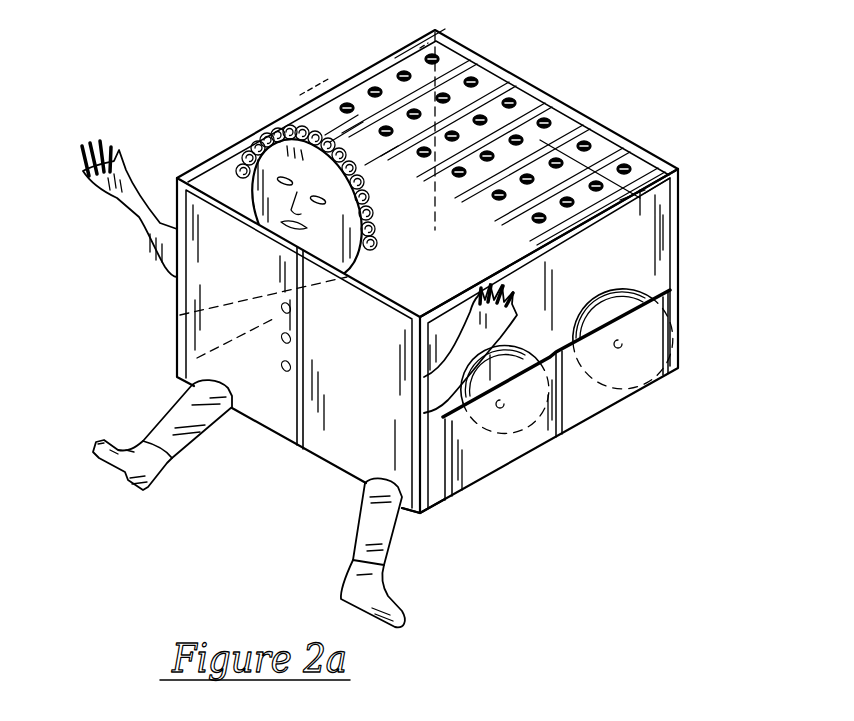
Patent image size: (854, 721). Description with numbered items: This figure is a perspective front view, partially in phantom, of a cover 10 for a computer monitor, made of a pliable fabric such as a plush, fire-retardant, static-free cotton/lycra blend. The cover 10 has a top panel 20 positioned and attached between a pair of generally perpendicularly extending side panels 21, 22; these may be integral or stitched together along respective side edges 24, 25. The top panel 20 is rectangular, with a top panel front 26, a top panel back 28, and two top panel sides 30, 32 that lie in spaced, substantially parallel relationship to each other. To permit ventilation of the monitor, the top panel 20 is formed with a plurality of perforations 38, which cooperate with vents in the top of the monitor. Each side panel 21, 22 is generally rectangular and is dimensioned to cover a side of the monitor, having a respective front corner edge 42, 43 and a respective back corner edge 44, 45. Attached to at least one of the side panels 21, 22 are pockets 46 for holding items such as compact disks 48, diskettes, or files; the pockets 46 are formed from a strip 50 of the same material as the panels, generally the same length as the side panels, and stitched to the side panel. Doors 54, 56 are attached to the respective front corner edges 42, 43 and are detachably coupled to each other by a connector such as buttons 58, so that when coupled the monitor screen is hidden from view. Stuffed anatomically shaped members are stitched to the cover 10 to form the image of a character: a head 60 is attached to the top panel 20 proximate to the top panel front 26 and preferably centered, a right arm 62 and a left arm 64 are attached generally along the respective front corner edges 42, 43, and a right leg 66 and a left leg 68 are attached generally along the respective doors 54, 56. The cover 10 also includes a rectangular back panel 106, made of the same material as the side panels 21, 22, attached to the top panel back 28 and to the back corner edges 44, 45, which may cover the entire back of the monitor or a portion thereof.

The cover 10 is at (195, 38).
The top panel 20 is at (603, 137).
The side panel 21 is at (180, 314).
The side panel 22 is at (662, 259).
The side edge 24 is at (332, 88).
The side edge 25 is at (640, 192).
The top panel front 26 is at (187, 180).
The top panel back 28 is at (538, 90).
The top panel side 30 is at (295, 103).
The top panel side 32 is at (623, 197).
The perforations 38 is at (470, 78).
The front corner edge 42 is at (177, 283).
The front corner edge 43 is at (420, 487).
The back corner edge 44 is at (404, 50).
The back corner edge 45 is at (680, 328).
The pockets 46 is at (577, 412).
The compact disks 48 is at (517, 377).
The strip 50 is at (482, 460).
The door 54 is at (208, 276).
The door 56 is at (343, 372).
The buttons 58 is at (282, 305).
The head 60 is at (245, 137).
The right arm 62 is at (120, 207).
The left arm 64 is at (443, 377).
The right leg 66 is at (177, 410).
The left leg 68 is at (367, 513).
The back panel 106 is at (682, 187).